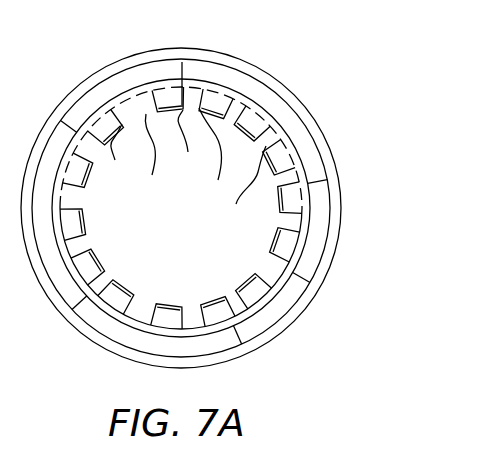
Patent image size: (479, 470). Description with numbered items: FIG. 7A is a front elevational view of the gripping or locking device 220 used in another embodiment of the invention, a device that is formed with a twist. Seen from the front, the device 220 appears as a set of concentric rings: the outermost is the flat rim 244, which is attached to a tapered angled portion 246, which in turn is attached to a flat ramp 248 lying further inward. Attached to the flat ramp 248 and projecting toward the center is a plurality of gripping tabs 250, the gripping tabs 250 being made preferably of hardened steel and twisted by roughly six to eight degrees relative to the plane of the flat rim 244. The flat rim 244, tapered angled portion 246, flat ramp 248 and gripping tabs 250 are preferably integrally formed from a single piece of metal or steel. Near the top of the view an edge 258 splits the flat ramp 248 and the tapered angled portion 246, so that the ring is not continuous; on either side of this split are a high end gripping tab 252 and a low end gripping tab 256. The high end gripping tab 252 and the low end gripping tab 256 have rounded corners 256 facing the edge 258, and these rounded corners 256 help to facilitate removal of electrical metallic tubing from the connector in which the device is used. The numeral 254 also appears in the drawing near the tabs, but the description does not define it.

The gripping or locking device 220 is at (216, 193).
The flat rim 244 is at (320, 108).
The tapered angled portion 246 is at (309, 259).
The flat ramp 248 is at (210, 214).
The gripping tabs 250 is at (280, 199).
The high end gripping tab 252 is at (211, 154).
The strand 254 is at (116, 157).
The low end gripping tab 256 is at (195, 164).
The edge 258 is at (181, 79).